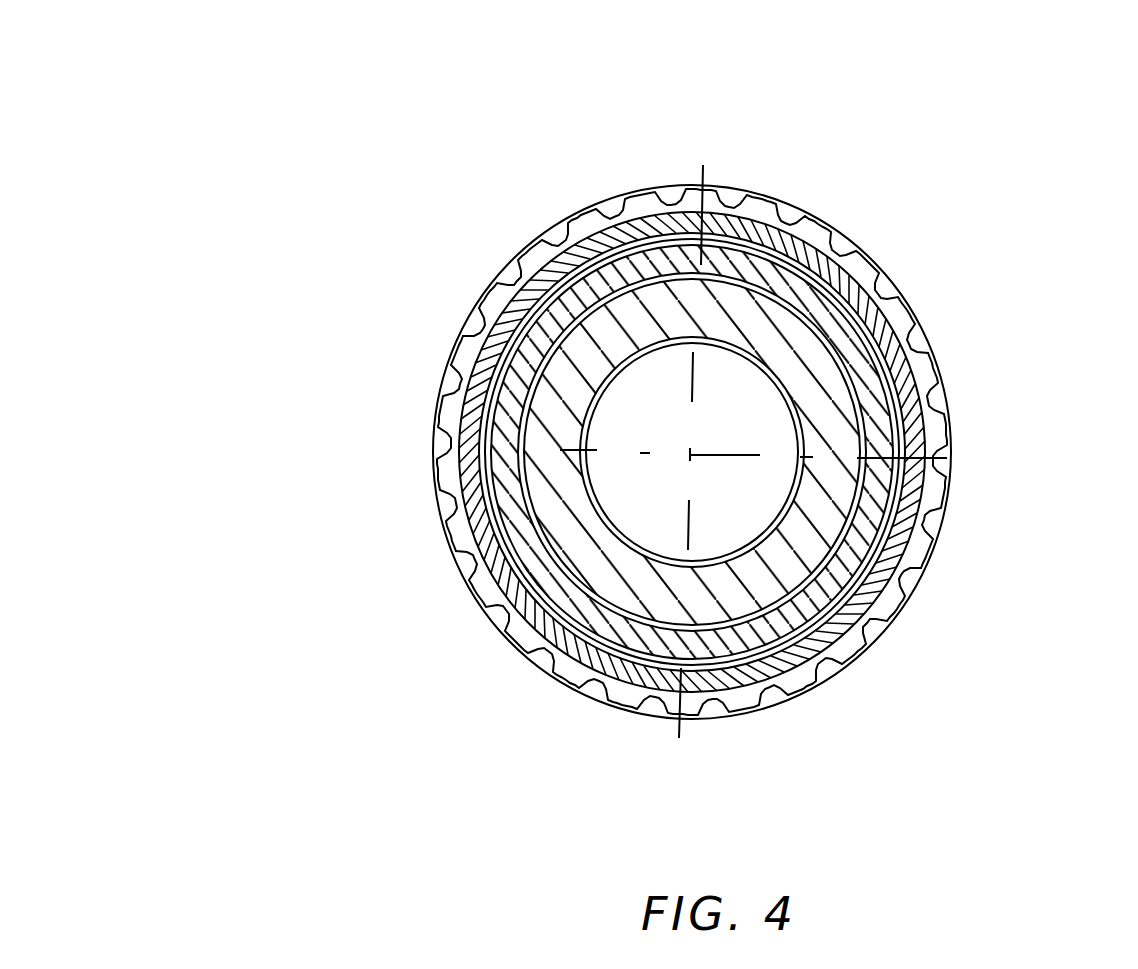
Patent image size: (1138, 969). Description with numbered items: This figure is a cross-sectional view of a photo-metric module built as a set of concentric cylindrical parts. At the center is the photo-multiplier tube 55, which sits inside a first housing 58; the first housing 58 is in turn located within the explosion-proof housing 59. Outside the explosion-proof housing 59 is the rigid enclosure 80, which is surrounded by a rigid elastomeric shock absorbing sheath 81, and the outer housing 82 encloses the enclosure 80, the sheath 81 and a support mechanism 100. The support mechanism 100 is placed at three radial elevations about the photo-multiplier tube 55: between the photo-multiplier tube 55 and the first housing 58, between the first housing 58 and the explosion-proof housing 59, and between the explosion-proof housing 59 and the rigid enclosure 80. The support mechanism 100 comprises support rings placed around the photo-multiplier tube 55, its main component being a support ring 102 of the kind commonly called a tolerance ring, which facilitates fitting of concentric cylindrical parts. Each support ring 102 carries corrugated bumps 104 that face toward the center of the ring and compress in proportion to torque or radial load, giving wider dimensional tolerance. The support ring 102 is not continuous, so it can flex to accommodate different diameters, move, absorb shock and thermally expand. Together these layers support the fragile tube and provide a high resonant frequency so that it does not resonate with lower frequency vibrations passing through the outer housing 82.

The photo-multiplier tube 55 is at (654, 393).
The first housing 58 is at (563, 503).
The explosion-proof housing 59 is at (817, 596).
The rigid enclosure 80 is at (903, 518).
The rigid elastomeric shock absorbing sheath 81 is at (900, 583).
The outer housing 82 is at (908, 290).
The support mechanism 100 is at (745, 343).
The support ring 102 is at (897, 373).
The corrugated bumps 104 is at (890, 400).